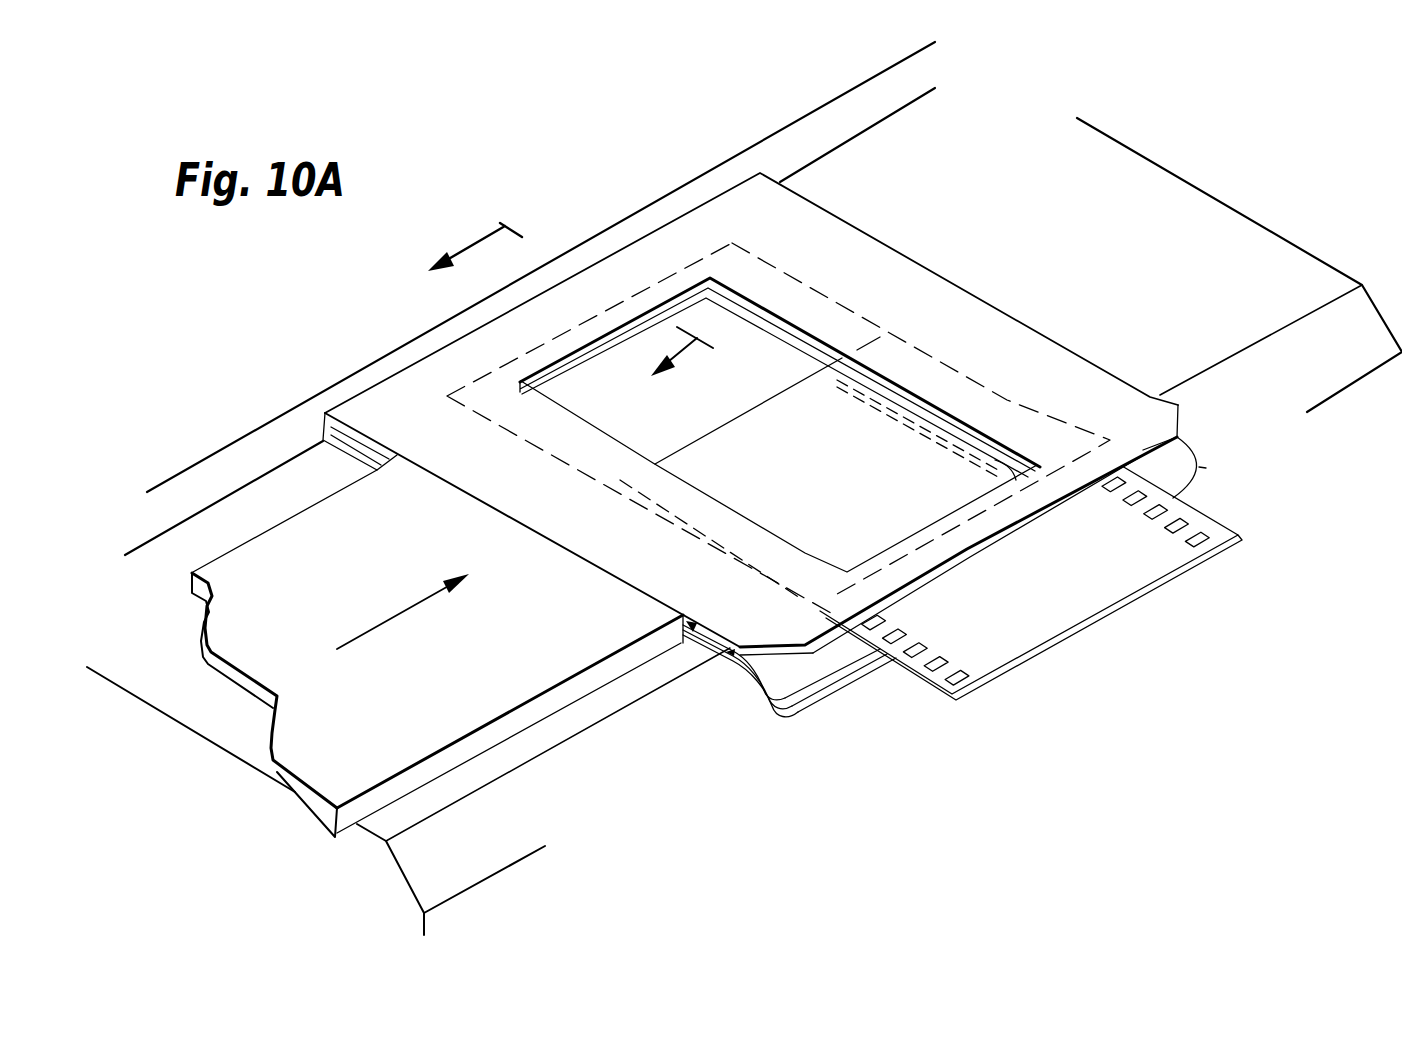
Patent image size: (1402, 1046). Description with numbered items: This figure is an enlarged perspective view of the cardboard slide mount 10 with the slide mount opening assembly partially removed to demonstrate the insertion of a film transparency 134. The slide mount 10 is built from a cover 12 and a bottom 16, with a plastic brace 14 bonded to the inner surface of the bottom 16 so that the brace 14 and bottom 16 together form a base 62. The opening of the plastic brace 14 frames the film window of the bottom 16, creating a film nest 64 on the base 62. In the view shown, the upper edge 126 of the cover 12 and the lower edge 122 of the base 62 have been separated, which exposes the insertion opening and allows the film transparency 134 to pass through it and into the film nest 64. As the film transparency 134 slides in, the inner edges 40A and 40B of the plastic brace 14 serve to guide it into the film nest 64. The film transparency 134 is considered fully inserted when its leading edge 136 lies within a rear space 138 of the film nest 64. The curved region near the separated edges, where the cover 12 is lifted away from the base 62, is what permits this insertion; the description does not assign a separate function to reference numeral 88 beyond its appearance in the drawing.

The cardboard slide mount 10 is at (946, 195).
The cover 12 is at (1053, 348).
The plastic brace 14 is at (773, 673).
The bottom 16 is at (728, 675).
The inner edge of the plastic brace 40A is at (555, 465).
The inner edge of the plastic brace 40B is at (845, 307).
The base 62 is at (766, 735).
The film nest 64 is at (768, 297).
The sheet edge 88 is at (828, 648).
The lower edge of the base 122 is at (860, 676).
The upper edge of the cover 126 is at (1144, 450).
The film transparency 134 is at (1121, 605).
The leading edge of the film transparency 136 is at (747, 410).
The rear space of the film nest 138 is at (641, 296).